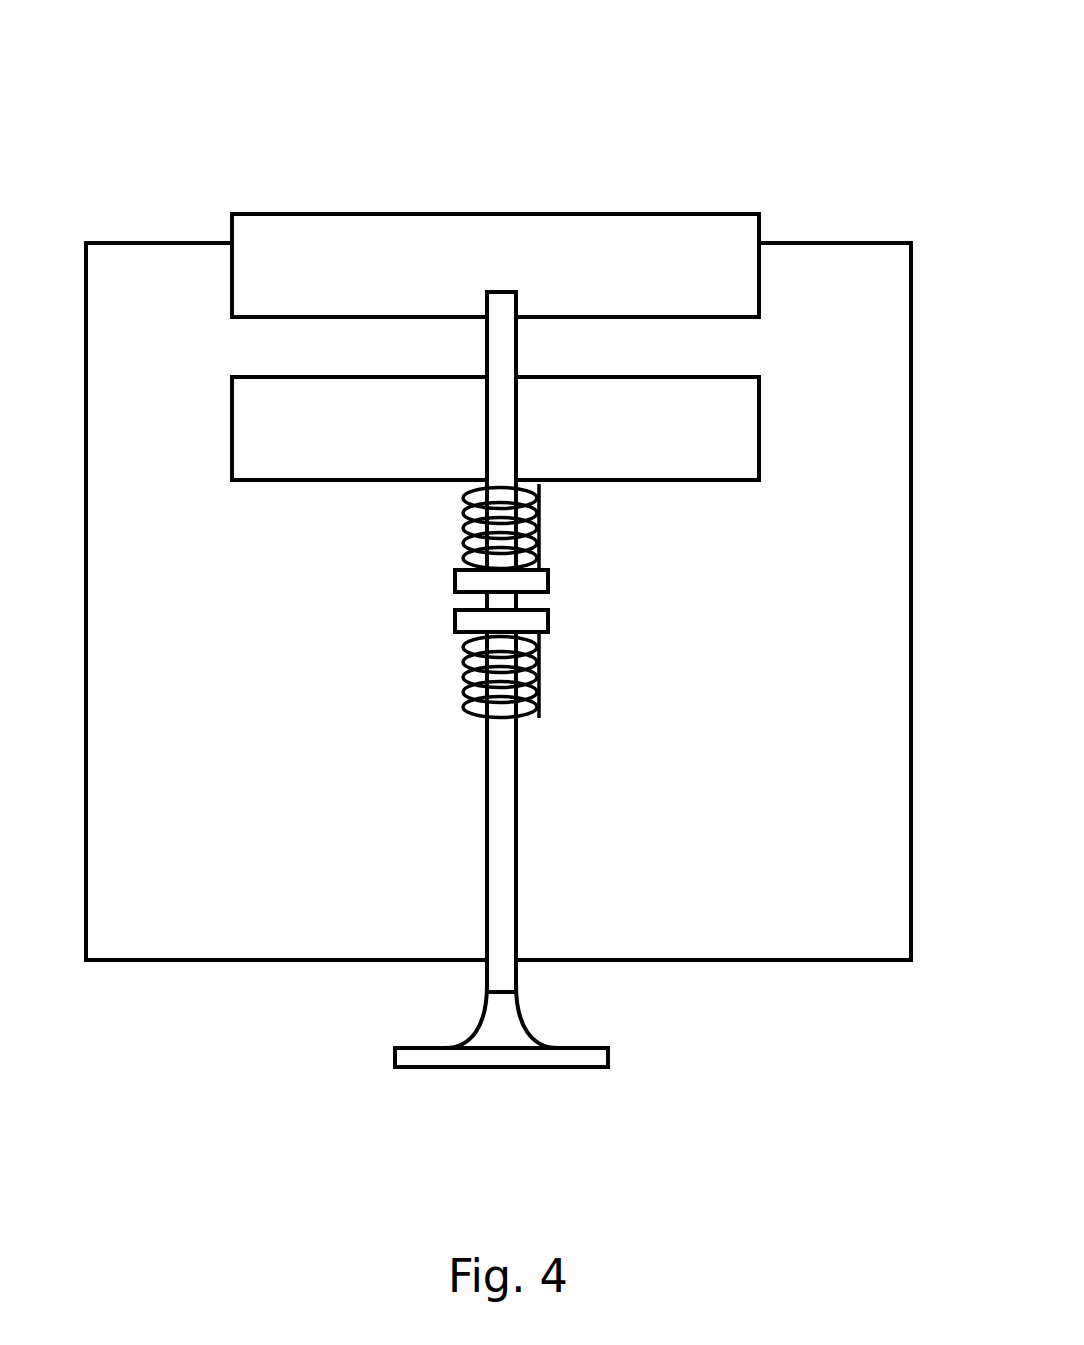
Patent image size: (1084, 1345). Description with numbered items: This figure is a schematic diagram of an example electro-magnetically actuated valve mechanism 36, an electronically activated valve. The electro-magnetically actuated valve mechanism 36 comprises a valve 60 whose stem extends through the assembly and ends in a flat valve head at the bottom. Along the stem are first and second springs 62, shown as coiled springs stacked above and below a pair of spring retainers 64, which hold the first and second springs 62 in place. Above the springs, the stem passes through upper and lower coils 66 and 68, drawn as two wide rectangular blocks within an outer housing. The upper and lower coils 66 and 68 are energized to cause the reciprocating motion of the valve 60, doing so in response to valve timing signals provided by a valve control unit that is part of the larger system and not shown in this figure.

The electro-magnetically actuated valve mechanism 36 is at (142, 72).
The valve 60 is at (394, 1056).
The first and second springs 62 is at (539, 517).
The spring retainers 64 is at (454, 582).
The upper coil 66 is at (760, 275).
The lower coil 68 is at (760, 441).